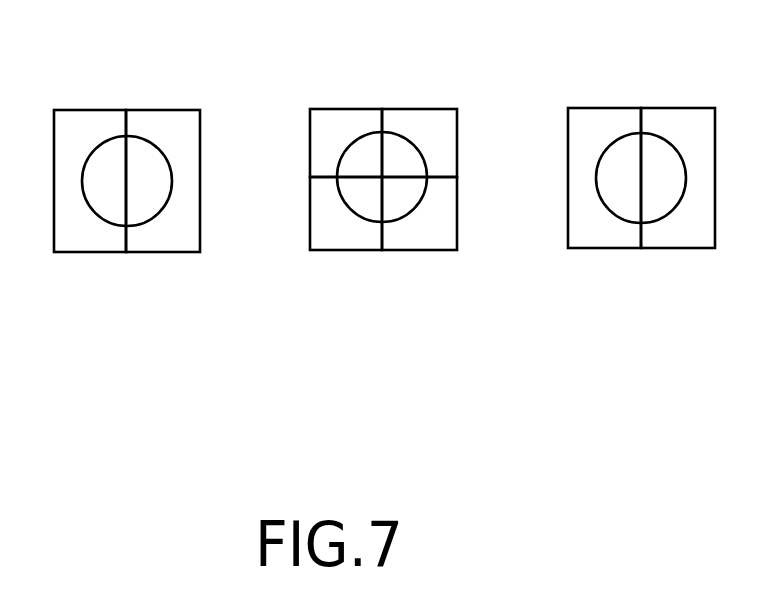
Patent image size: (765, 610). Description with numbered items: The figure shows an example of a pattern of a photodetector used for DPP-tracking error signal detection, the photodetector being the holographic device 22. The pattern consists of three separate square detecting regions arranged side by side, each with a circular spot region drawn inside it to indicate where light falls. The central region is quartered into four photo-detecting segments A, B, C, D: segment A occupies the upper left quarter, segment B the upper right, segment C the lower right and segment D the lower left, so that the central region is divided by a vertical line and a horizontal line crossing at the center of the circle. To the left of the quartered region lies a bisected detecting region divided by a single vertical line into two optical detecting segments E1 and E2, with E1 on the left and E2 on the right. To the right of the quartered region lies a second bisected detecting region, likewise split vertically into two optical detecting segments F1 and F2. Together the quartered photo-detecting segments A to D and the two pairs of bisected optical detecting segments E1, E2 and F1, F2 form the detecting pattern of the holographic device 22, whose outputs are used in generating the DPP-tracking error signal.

The holographic device 22 is at (293, 416).
The optical detecting segment E1 is at (85, 108).
The optical detecting segment E2 is at (173, 108).
The photo-detecting segment A is at (342, 108).
The photo-detecting segment B is at (430, 108).
The photo-detecting segment C is at (427, 252).
The photo-detecting segment D is at (338, 252).
The optical detecting segment F1 is at (603, 108).
The optical detecting segment F2 is at (690, 108).